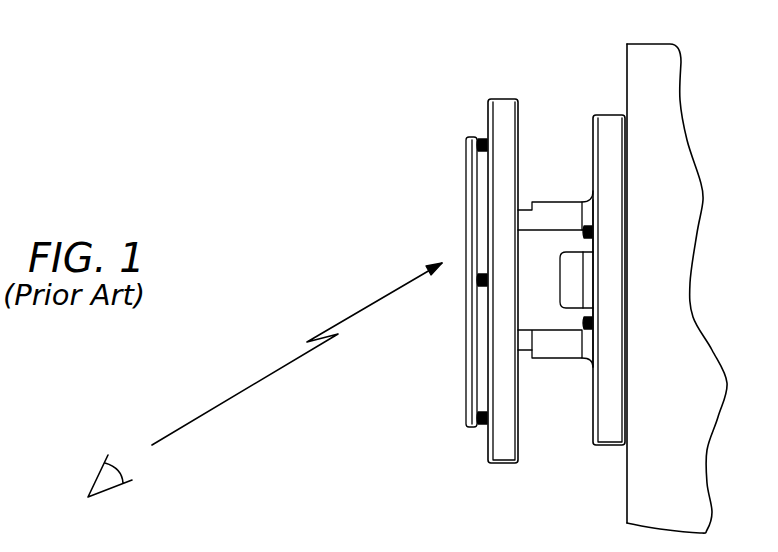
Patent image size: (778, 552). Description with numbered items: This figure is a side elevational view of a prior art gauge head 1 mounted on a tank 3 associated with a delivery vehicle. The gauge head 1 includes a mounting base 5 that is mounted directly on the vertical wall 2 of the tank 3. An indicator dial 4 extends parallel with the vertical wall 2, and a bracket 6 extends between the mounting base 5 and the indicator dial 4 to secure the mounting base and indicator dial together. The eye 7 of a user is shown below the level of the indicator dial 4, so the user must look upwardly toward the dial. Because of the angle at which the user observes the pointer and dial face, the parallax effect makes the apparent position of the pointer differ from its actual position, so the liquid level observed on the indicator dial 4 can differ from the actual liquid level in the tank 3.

The gauge head 1 is at (399, 110).
The vertical wall 2 is at (627, 63).
The tank 3 is at (670, 77).
The indicator dial 4 is at (477, 197).
The mounting base 5 is at (612, 194).
The bracket 6 is at (545, 312).
The eye 7 is at (85, 470).